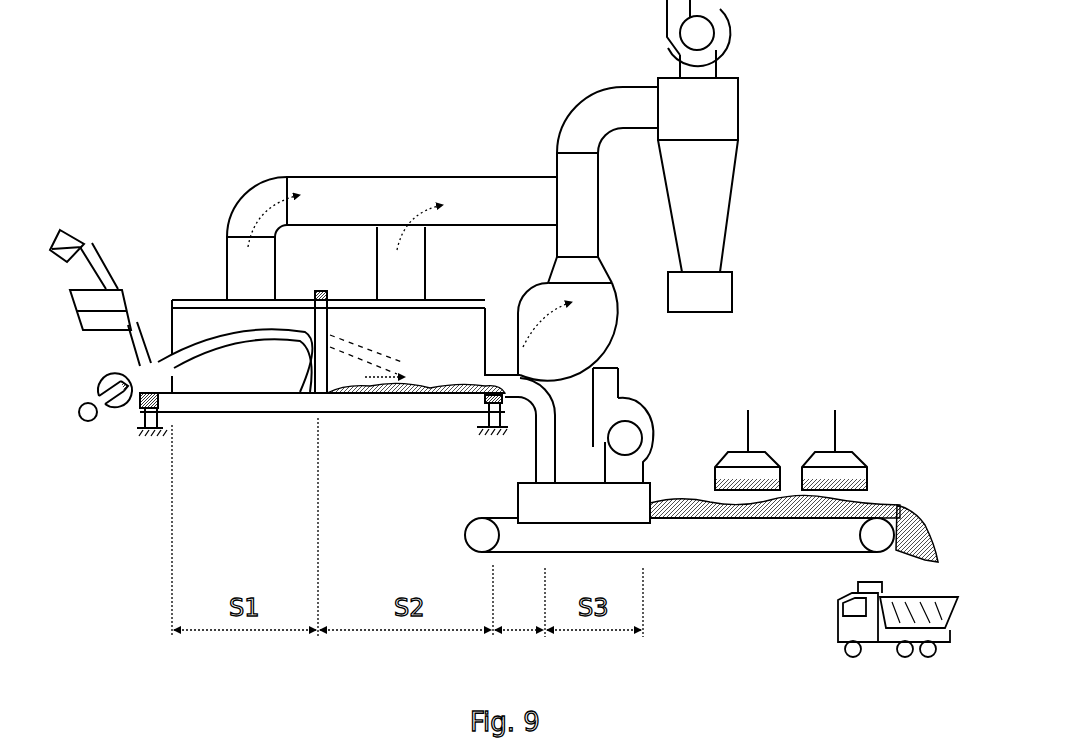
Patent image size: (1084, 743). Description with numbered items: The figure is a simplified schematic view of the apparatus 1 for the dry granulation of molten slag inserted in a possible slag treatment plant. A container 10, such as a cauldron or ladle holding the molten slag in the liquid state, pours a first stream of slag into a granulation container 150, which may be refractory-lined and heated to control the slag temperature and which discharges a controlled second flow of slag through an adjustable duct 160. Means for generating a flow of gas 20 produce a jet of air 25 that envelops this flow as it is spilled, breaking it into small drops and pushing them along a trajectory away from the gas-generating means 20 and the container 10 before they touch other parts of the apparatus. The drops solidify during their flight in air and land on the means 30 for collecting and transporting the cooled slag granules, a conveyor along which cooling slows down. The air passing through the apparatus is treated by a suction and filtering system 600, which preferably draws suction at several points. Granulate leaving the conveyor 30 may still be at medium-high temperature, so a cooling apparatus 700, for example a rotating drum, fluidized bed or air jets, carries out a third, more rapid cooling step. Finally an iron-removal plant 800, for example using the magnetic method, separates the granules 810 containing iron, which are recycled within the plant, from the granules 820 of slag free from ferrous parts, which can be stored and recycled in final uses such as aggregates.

The apparatus 1 is at (216, 296).
The container 10 is at (81, 240).
The means for generating a flow of gas 20 is at (98, 429).
The flow of gas 25 is at (101, 385).
The means for collecting and transporting the cooled slag granules 30 is at (317, 412).
The granulation container 150 is at (114, 322).
The adjustable duct 160 is at (131, 323).
The suction and filtering system 600 is at (416, 160).
The cooling apparatus 700 is at (517, 500).
The iron-removal plant 800 is at (837, 425).
The granules containing iron 810 is at (866, 485).
The granules of slag free from ferrous parts 820 is at (903, 552).